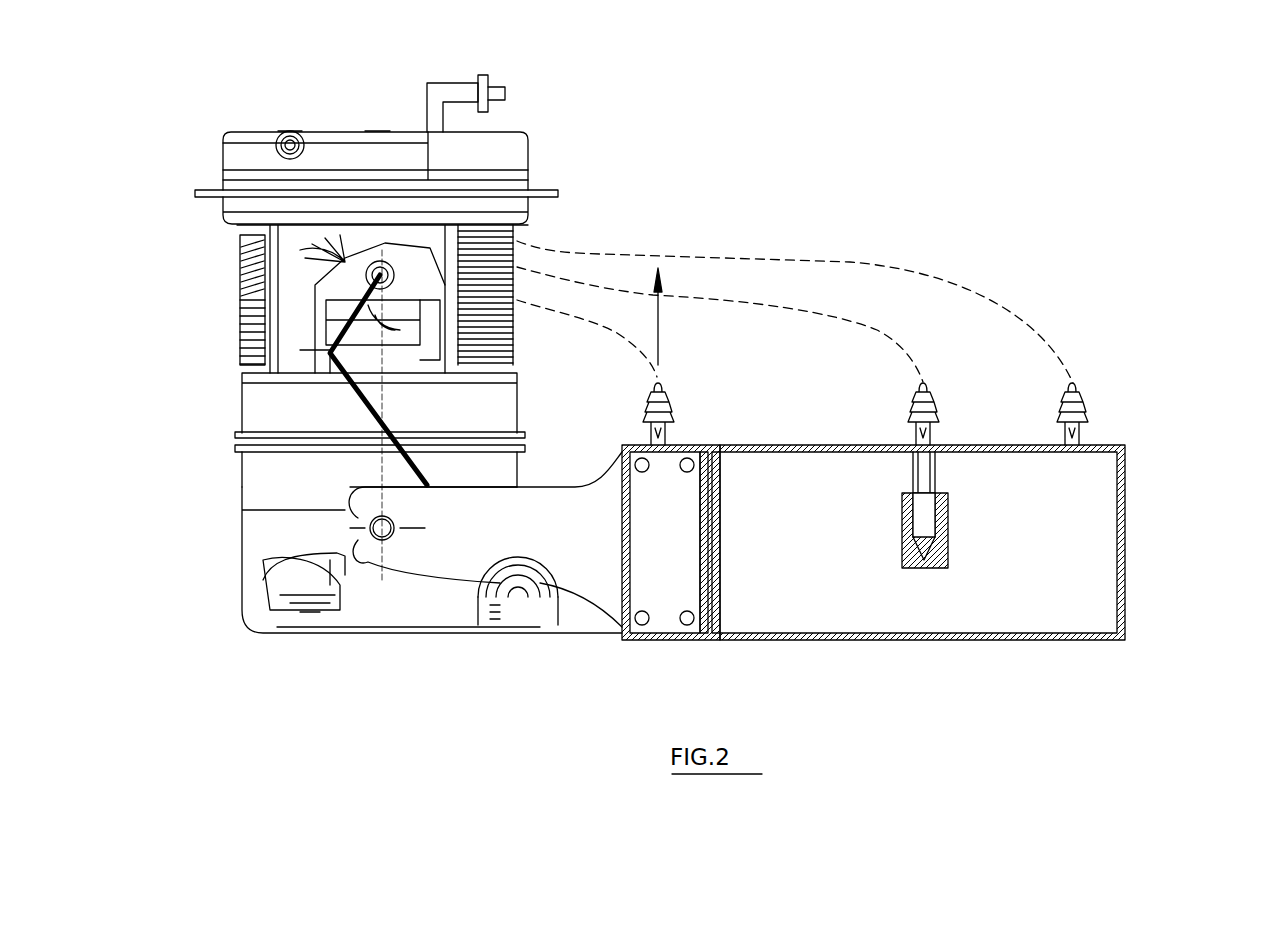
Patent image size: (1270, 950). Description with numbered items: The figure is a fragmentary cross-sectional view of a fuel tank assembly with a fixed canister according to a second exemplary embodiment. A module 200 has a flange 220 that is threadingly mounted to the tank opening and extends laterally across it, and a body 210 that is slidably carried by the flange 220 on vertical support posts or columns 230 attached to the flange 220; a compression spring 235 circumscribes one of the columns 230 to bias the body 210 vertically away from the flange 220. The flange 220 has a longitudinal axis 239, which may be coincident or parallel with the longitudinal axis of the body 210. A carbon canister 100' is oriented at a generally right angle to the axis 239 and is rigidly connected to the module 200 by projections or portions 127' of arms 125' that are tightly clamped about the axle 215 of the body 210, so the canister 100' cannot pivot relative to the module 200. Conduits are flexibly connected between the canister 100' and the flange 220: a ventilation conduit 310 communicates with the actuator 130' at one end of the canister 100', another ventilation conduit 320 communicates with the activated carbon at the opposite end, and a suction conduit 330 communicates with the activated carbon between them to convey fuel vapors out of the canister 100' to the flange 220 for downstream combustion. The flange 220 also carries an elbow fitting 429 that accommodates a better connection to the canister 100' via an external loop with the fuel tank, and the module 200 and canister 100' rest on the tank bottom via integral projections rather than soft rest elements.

The elbow fitting 429 is at (450, 93).
The flange 220 is at (230, 160).
The longitudinal axis 239 is at (300, 235).
The vertical support posts or columns 230 is at (265, 280).
The compression spring 235 is at (513, 262).
The module 200 is at (228, 414).
The body 210 is at (265, 487).
The axle 215 is at (428, 635).
The projections or portions 127' is at (326, 629).
The arms 125' is at (518, 629).
The actuator 130' is at (660, 581).
The canister 100' is at (980, 542).
The ventilation conduit 310 is at (668, 380).
The suction conduit 330 is at (935, 393).
The ventilation conduit 320 is at (1080, 387).